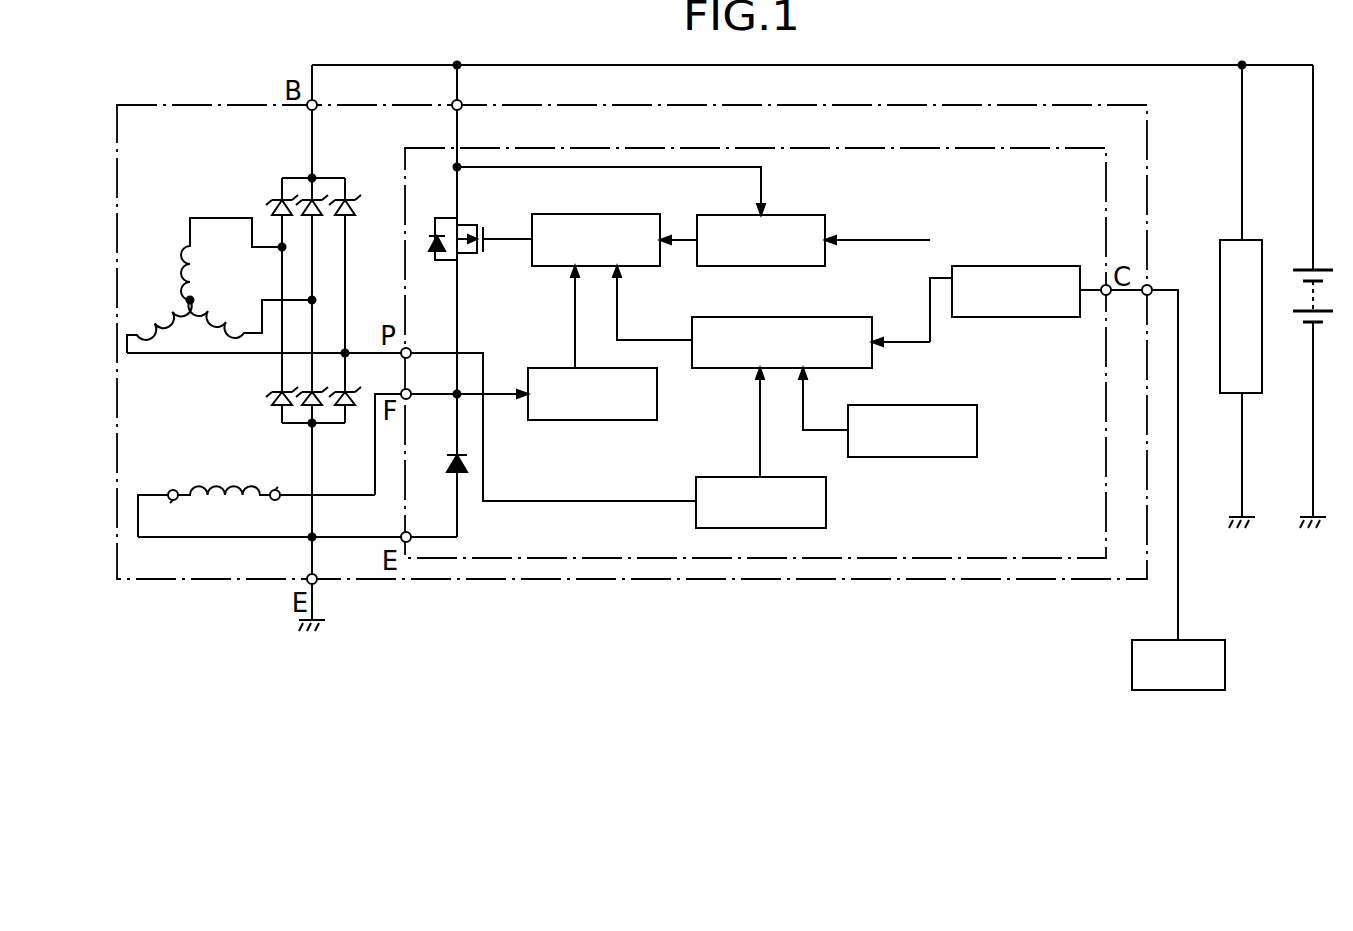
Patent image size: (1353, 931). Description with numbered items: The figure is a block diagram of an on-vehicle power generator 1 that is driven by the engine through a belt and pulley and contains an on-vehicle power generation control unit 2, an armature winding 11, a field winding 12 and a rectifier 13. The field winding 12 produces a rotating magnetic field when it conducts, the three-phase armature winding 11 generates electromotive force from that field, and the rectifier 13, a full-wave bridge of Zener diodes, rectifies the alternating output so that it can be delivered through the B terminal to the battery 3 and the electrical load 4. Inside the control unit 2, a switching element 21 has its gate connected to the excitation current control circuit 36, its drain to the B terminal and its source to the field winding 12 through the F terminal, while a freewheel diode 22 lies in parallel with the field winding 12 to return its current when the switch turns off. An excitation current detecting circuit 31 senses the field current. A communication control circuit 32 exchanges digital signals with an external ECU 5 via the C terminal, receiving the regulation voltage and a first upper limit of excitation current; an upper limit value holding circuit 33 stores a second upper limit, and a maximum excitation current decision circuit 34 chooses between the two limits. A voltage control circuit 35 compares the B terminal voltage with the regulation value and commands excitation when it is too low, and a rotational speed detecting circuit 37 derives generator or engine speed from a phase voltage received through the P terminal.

The on-vehicle power generator 1 is at (1108, 105).
The on-vehicle power generation control unit 2 is at (1085, 148).
The battery 3 is at (1320, 270).
The electrical load 4 is at (1250, 240).
The ECU 5 is at (1207, 640).
The armature winding 11 is at (186, 297).
The field winding 12 is at (224, 488).
The rectifier 13 is at (292, 178).
The switching element 21 is at (440, 218).
The freewheel diode 22 is at (450, 455).
The excitation current detecting circuit 31 is at (548, 368).
The communication control circuit 32 is at (1020, 266).
The upper limit value holding circuit 33 is at (914, 405).
The maximum excitation current decision circuit 34 is at (818, 317).
The voltage control circuit 35 is at (788, 215).
The excitation current control circuit 36 is at (626, 214).
The rotational speed detecting circuit 37 is at (728, 477).